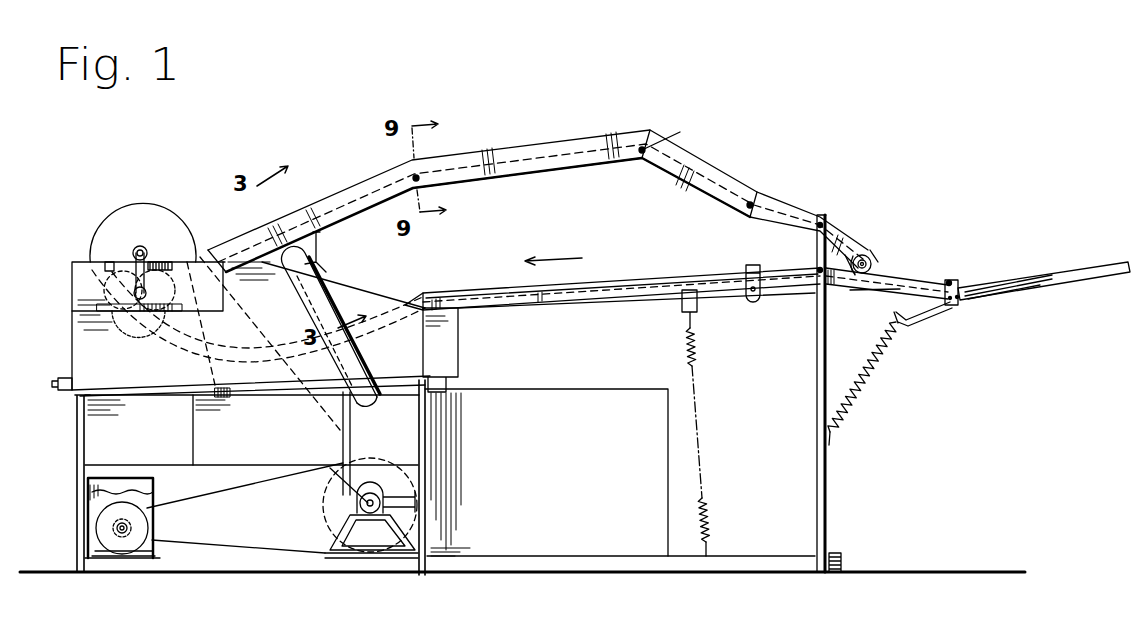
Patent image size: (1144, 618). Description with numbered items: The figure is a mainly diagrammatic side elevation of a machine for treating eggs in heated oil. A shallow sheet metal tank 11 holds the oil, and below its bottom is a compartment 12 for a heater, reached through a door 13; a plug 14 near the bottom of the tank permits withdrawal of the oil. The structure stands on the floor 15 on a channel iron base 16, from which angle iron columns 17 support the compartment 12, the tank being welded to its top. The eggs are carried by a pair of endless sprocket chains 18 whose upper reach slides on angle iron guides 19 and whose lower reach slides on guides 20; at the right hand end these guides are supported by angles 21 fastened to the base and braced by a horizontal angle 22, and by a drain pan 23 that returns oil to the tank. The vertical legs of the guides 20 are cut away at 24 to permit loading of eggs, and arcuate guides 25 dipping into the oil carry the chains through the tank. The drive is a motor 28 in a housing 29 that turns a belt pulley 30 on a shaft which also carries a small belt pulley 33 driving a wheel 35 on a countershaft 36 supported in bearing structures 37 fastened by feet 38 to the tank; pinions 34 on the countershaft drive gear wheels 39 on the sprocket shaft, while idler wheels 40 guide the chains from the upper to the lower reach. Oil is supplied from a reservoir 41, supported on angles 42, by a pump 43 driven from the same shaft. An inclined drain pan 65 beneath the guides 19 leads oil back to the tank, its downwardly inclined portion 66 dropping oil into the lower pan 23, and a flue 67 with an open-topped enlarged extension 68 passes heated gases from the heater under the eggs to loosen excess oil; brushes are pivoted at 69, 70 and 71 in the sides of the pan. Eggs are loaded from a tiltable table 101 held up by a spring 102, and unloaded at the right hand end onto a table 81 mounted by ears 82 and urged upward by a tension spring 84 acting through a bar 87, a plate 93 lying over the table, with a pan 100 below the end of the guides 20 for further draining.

The tank 11 is at (72, 358).
The heater compartment 12 is at (100, 436).
The door 13 is at (226, 456).
The plug 14 is at (58, 384).
The floor 15 is at (935, 568).
The channel iron base 16 is at (732, 566).
The angle iron columns 17 is at (76, 520).
The sprocket chains 18 is at (872, 262).
The angle iron guides 19 is at (218, 250).
The angle iron guides 20 is at (495, 292).
The angles 21 is at (830, 492).
The horizontal angle 22 is at (836, 552).
The drain pan 23 is at (720, 312).
The cut-away portion 24 is at (744, 268).
The arcuate guides 25 is at (222, 360).
The motor 28 is at (145, 528).
The housing 29 is at (153, 498).
The belt pulley 30 is at (325, 512).
The small belt pulley 33 is at (377, 494).
The pinions 34 is at (147, 250).
The wheel or pulley 35 is at (160, 218).
The countershaft 36 is at (136, 248).
The bearing structures 37 is at (110, 292).
The feet 38 is at (114, 262).
The gear wheels 39 is at (168, 292).
The idler wheels 40 is at (842, 250).
The reservoir 41 is at (655, 463).
The angles 42 is at (436, 550).
The pump 43 is at (340, 526).
The inclined drain pan 65 is at (528, 170).
The downwardly inclined portion 66 is at (718, 196).
The flue 67 is at (318, 318).
The enlarged extension 68 is at (318, 248).
The brush pivot 69 is at (418, 175).
The brush pivot 70 is at (669, 141).
The brush pivot 71 is at (748, 200).
The table or slide 81 is at (1094, 270).
The ears 82 is at (955, 282).
The tension spring 84 is at (866, 386).
The bar 87 is at (930, 318).
The plate 93 is at (1012, 270).
The pan 100 is at (878, 296).
The tiltable table 101 is at (655, 278).
The spring 102 is at (696, 348).